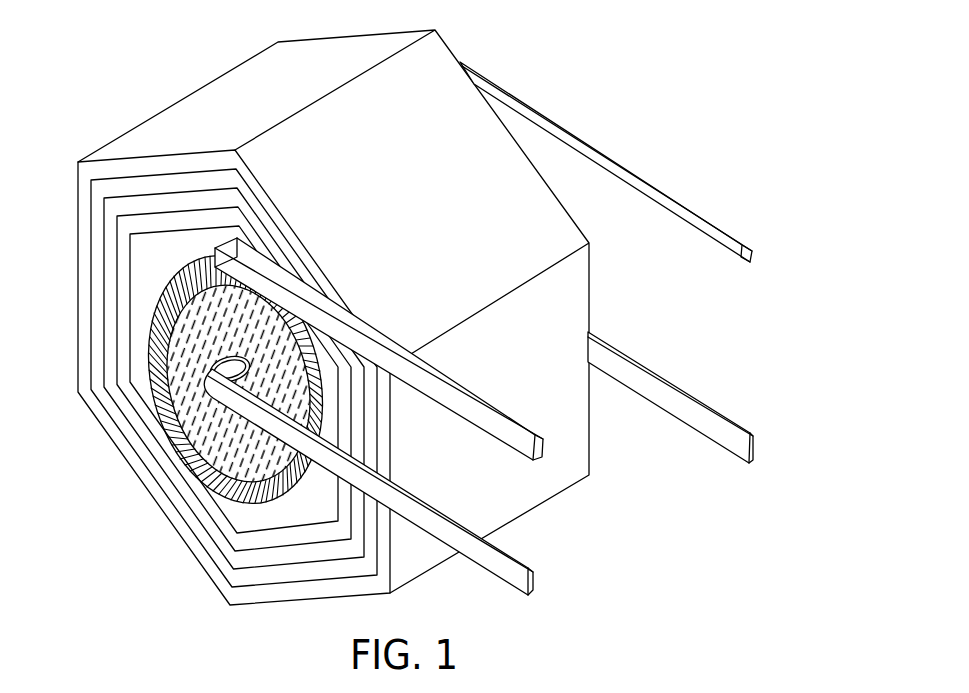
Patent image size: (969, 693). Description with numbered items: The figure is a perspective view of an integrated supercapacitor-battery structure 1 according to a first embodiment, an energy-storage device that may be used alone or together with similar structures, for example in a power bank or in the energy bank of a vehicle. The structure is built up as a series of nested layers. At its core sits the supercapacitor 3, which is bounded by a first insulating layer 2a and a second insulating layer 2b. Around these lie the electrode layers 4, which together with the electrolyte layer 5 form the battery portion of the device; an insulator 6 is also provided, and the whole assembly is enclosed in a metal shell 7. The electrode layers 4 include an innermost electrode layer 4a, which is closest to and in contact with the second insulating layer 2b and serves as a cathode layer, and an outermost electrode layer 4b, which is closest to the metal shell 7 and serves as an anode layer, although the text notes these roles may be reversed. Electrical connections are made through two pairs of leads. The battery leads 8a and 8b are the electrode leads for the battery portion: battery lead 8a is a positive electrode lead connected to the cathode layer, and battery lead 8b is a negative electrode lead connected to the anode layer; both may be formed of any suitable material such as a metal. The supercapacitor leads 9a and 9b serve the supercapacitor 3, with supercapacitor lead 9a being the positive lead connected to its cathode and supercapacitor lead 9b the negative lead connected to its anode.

The integrated supercapacitor-battery structure 1 is at (413, 323).
The first insulating layer 2a is at (197, 342).
The second insulating layer 2b is at (160, 270).
The supercapacitor 3 is at (223, 470).
The electrode layers 4 is at (130, 530).
The innermost electrode layer 4a is at (238, 512).
The outermost electrode layer 4b is at (243, 555).
The electrolyte layer 5 is at (277, 535).
The insulator 6 is at (307, 572).
The metal shell 7 is at (122, 168).
The battery lead 8a is at (548, 450).
The battery lead 8b is at (698, 213).
The supercapacitor lead 9a is at (535, 581).
The supercapacitor lead 9b is at (755, 447).